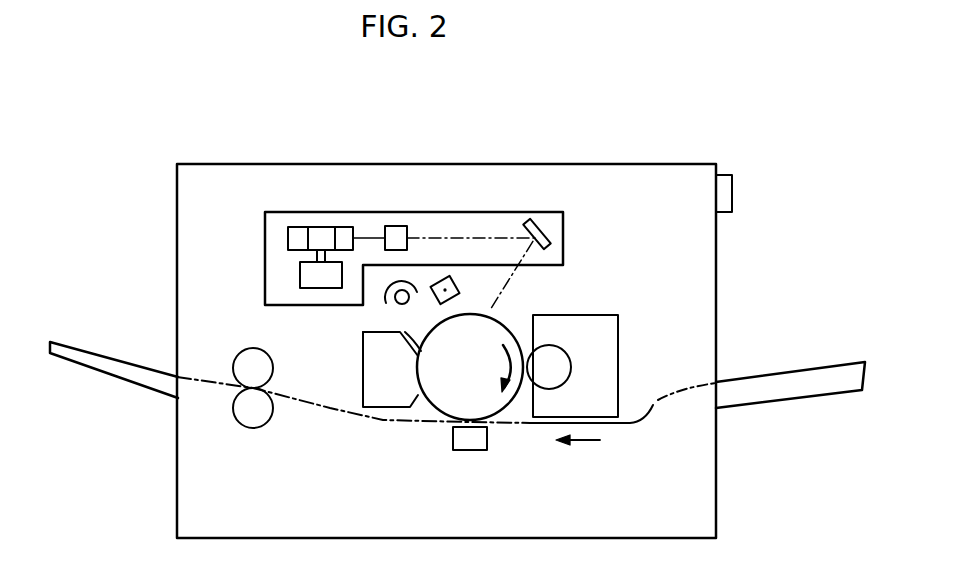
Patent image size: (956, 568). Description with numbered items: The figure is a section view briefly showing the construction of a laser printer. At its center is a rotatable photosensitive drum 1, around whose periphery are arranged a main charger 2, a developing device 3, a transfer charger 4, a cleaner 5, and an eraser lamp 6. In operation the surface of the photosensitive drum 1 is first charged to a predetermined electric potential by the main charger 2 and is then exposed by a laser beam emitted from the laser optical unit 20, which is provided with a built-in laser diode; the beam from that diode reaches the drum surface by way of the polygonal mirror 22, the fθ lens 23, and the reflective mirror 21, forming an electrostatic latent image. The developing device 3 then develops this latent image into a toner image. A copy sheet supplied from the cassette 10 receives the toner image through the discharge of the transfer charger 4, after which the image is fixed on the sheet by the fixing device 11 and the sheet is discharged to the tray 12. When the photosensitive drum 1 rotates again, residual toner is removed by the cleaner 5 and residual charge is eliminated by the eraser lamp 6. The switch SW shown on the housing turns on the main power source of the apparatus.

The photosensitive drum 1 is at (500, 318).
The main charger 2 is at (460, 286).
The developing device 3 is at (620, 345).
The transfer charger 4 is at (468, 450).
The cleaner 5 is at (363, 373).
The eraser lamp 6 is at (384, 306).
The cassette 10 is at (780, 372).
The fixing device 11 is at (260, 428).
The tray 12 is at (118, 357).
The laser optical unit 20 is at (465, 210).
The reflective mirror 21 is at (553, 227).
The polygonal mirror 22 is at (300, 232).
The fθ lens 23 is at (398, 233).
The switch SW is at (732, 190).